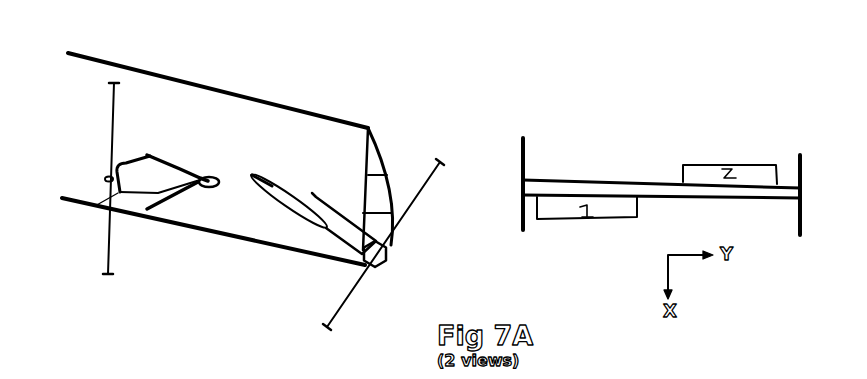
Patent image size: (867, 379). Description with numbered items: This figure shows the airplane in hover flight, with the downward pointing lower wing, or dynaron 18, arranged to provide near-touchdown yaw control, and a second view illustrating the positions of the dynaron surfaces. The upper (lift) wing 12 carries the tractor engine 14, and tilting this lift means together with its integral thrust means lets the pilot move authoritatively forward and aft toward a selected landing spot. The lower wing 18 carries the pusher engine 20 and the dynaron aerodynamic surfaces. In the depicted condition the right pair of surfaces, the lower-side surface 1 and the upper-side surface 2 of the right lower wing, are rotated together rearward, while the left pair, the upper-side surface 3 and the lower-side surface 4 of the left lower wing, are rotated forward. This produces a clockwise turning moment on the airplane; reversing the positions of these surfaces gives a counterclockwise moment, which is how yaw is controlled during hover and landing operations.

The aerodynamic surface on lower side of right lower wing 1 is at (170, 198).
The aerodynamic surface on upper side of right lower wing 2 is at (66, 199).
The aerodynamic surface on upper side of left lower wing 3 is at (153, 158).
The aerodynamic surface on lower side of left lower wing 4 is at (147, 154).
The upper (lift) wing 12 is at (277, 187).
The tractor engine on upper wing 14 is at (350, 212).
The lower wing (dynaron) 18 is at (209, 178).
The pusher engine of lower wing 20 is at (106, 178).